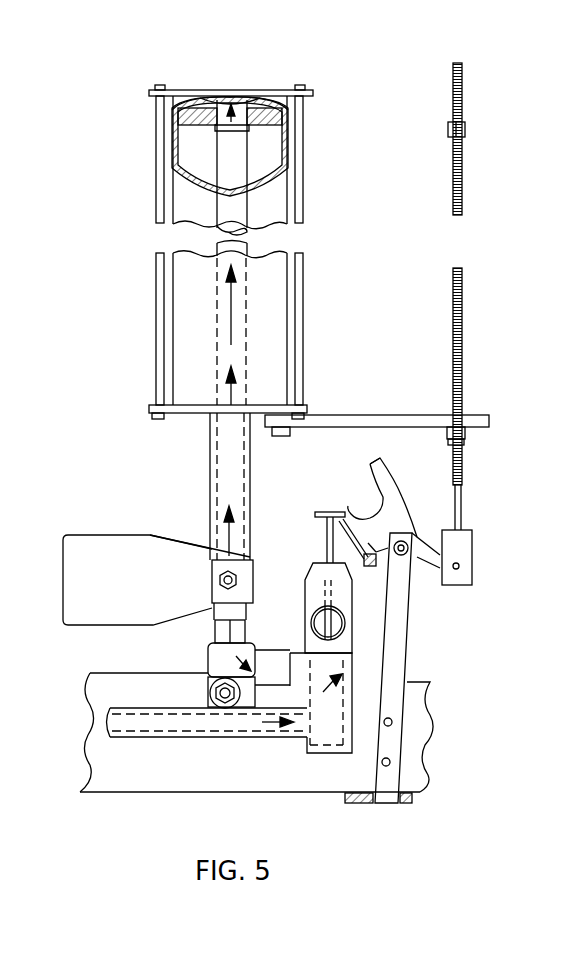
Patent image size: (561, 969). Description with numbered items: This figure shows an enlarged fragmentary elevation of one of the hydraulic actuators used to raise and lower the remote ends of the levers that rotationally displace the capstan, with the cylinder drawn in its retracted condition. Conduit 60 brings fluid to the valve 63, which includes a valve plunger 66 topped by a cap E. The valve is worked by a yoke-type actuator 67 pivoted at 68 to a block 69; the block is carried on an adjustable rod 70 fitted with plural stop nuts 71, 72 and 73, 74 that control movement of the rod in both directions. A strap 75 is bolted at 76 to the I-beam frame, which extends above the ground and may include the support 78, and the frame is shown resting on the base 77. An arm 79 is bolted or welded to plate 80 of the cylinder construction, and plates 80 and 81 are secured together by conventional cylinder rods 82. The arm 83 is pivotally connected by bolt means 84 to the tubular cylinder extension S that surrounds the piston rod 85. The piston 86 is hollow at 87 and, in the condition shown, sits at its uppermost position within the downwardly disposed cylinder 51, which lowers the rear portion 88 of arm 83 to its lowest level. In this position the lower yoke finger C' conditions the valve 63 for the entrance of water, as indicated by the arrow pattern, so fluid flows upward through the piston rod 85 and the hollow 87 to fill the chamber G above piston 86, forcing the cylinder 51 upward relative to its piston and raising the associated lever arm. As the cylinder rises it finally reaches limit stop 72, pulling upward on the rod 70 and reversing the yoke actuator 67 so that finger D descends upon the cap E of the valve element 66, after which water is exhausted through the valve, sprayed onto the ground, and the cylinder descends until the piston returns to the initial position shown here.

The chamber G is at (212, 98).
The hollow of piston 87 is at (229, 96).
The plate 81 is at (260, 96).
The piston 86 is at (290, 115).
The cylinder 51 is at (289, 138).
The cylinder rods 82 is at (302, 184).
The plate 80 is at (273, 410).
The arm 79 is at (345, 418).
The stop nut 71 is at (463, 118).
The stop nut 72 is at (466, 134).
The adjustable rod 70 is at (463, 322).
The stop nut 73 is at (466, 432).
The stop nut 74 is at (464, 443).
The block 69 is at (460, 546).
The pivot 68 is at (460, 566).
The yoke-type actuator 67 is at (385, 478).
The finger D is at (376, 462).
The strap 75 is at (405, 628).
The bolt 76 is at (390, 760).
The valve plunger 66 is at (328, 512).
The cap E is at (318, 512).
The yoke finger C' is at (363, 524).
The tubular cylinder extension S is at (251, 464).
The bolt means 84 is at (250, 556).
The arm 83 is at (93, 553).
The rear portion of arm 88 is at (195, 562).
The piston rod 85 is at (215, 634).
The conduit 60 is at (152, 740).
The valve 63 is at (325, 745).
The base 77 is at (430, 757).
The support 78 is at (410, 803).